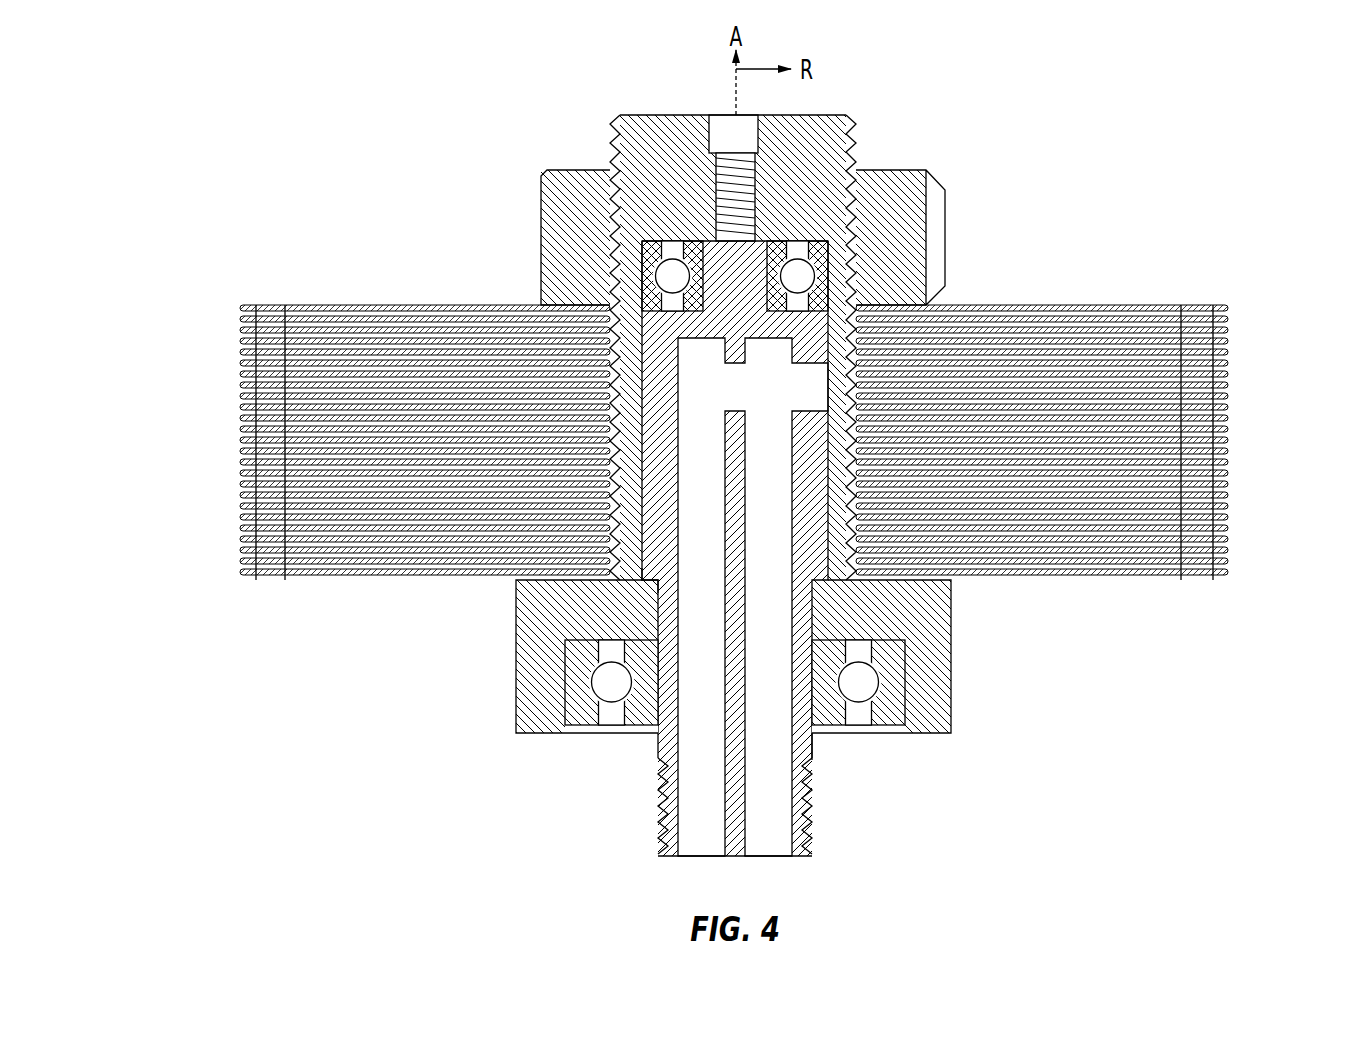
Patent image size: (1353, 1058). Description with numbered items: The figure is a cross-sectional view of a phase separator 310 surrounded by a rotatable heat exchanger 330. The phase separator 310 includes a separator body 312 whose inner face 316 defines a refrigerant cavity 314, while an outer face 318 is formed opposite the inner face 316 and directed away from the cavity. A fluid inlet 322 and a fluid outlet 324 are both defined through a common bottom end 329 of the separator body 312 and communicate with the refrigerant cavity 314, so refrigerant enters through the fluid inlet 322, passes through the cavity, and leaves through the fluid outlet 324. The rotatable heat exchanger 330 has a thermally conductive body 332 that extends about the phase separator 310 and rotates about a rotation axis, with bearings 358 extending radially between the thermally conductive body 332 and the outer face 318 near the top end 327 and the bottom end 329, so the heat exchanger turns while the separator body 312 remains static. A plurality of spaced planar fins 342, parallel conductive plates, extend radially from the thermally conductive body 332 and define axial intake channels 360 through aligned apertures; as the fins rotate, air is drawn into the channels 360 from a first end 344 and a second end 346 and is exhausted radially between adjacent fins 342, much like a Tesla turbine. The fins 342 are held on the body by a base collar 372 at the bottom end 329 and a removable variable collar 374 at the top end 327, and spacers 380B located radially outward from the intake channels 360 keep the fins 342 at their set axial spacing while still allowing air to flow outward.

The phase separator 310 is at (606, 792).
The separator body 312 is at (797, 807).
The refrigerant cavity 314 is at (744, 393).
The inner face 316 is at (674, 551).
The outer face 318 is at (630, 595).
The fluid inlet 322 is at (687, 854).
The fluid outlet 324 is at (766, 854).
The top end 327 is at (757, 233).
The bottom end 329 is at (809, 731).
The rotatable heat exchanger 330 is at (578, 96).
The thermally conductive body 332 is at (812, 107).
The spaced planar fins 342 is at (220, 575).
The first end 344 is at (238, 294).
The second end 346 is at (321, 580).
The bearings 358 is at (633, 238).
The axial intake channels 360 is at (489, 294).
The base collar 372 is at (945, 634).
The variable collar 374 is at (910, 192).
The spacers 380B is at (1222, 395).